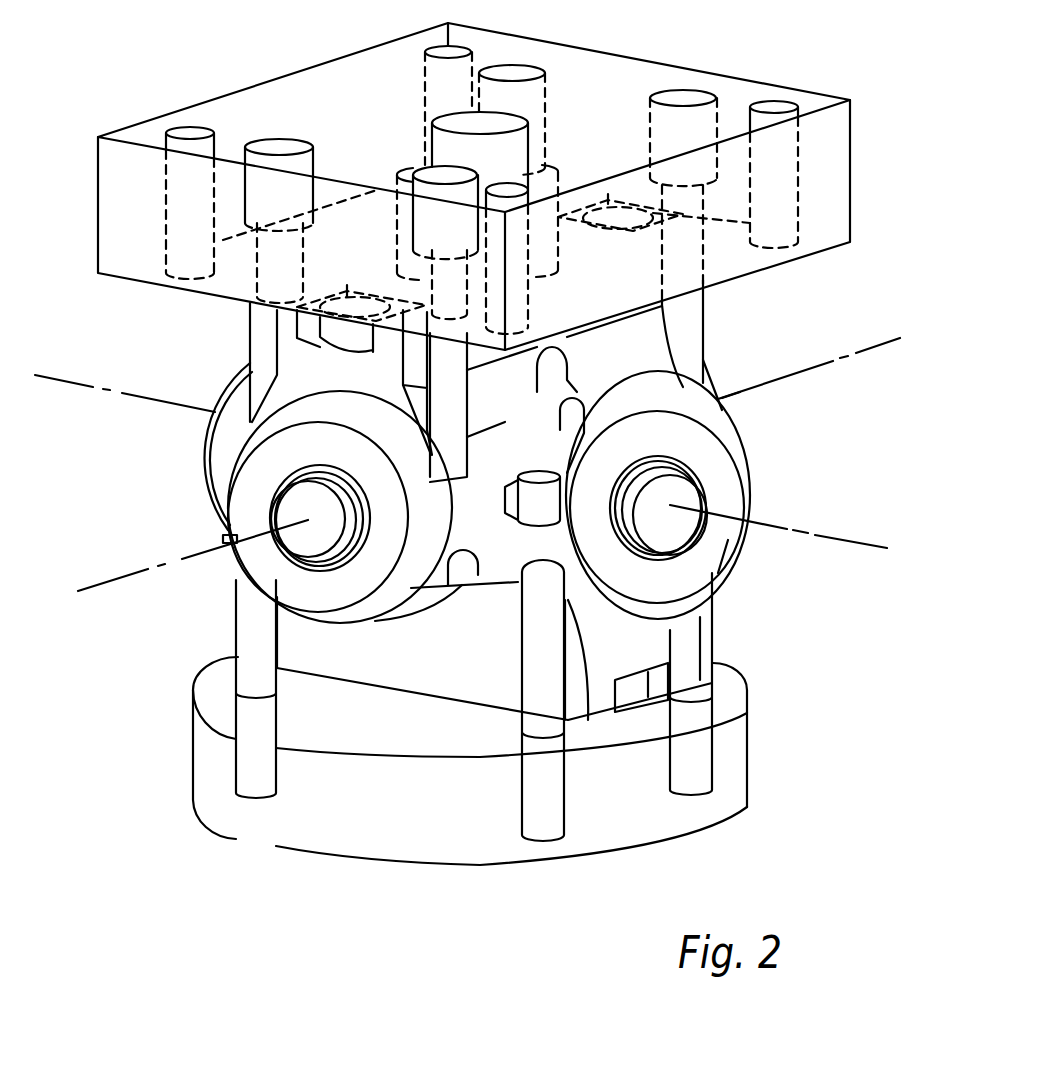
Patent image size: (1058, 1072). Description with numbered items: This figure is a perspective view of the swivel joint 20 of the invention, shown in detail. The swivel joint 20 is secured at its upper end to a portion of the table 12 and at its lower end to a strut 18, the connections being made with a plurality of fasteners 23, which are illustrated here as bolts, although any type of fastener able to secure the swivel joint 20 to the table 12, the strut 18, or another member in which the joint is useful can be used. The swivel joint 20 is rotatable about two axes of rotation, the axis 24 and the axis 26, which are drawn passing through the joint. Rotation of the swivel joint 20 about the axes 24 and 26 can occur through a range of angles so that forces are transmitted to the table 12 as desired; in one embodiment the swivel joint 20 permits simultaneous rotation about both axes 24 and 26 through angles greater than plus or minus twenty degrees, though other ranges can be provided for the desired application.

The table 12 is at (647, 62).
The strut 18 is at (262, 842).
The swivel joint 20 is at (675, 627).
The fasteners 23 is at (703, 323).
The axis of rotation 24 is at (760, 527).
The axis of rotation 26 is at (767, 388).